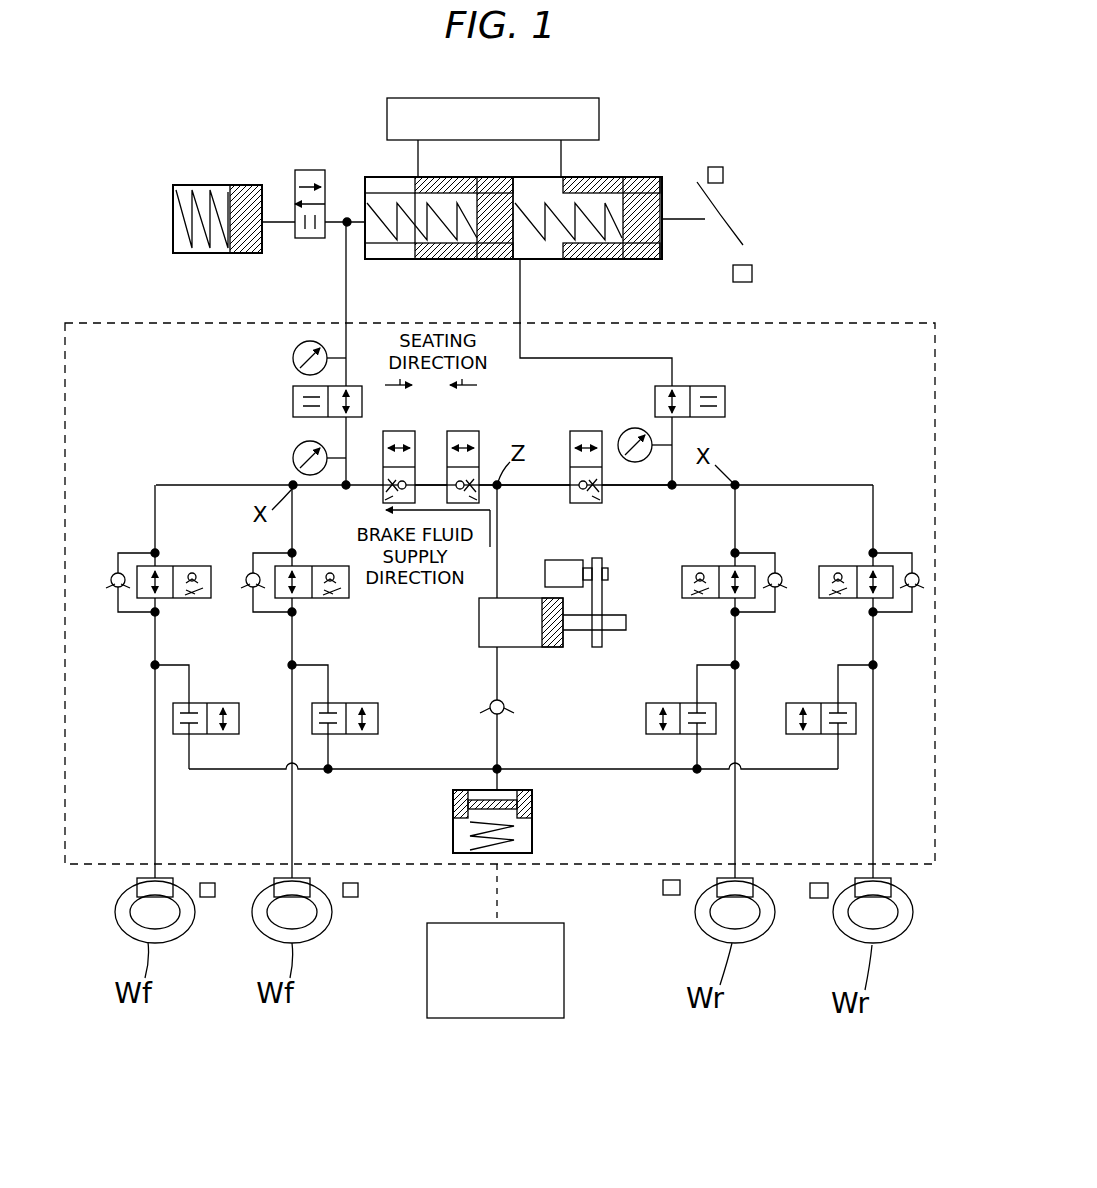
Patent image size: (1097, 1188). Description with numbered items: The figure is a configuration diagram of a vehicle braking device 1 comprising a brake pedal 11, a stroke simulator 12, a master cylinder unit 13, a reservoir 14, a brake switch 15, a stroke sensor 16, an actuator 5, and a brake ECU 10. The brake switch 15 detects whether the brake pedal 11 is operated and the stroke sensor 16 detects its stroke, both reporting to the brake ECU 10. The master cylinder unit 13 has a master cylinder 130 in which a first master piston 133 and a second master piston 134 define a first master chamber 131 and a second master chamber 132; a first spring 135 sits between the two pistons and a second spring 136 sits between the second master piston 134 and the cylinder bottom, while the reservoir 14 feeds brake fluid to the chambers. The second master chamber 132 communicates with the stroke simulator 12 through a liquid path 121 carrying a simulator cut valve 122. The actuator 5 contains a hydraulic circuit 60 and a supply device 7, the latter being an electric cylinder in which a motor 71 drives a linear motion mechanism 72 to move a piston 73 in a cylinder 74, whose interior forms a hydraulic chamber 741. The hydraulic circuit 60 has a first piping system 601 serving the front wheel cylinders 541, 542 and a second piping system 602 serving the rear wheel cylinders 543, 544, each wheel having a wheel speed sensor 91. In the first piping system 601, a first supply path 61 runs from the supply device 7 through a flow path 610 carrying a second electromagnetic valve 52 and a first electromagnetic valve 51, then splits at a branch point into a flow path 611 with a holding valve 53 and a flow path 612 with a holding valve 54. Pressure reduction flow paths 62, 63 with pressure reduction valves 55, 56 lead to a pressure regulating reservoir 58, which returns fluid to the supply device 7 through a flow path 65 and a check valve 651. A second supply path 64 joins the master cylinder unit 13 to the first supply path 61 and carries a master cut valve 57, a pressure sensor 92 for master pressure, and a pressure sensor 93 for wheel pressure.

The vehicle braking device 1 is at (148, 100).
The actuator 5 is at (130, 318).
The supply device 7 is at (479, 610).
The brake ECU 10 is at (440, 980).
The brake pedal 11 is at (745, 236).
The stroke simulator 12 is at (173, 215).
The master cylinder unit 13 is at (612, 176).
The reservoir 14 is at (468, 103).
The brake switch 15 is at (722, 170).
The stroke sensor 16 is at (752, 278).
The first electromagnetic valve 51 is at (400, 430).
The second electromagnetic valve 52 is at (465, 430).
The holding valve 53 is at (176, 566).
The holding valve 54 is at (350, 594).
The pressure reduction valve 55 is at (240, 716).
The pressure reduction valve 56 is at (378, 716).
The master cut valve 57 is at (293, 400).
The pressure regulating reservoir 58 is at (535, 840).
The hydraulic circuit 60 is at (217, 338).
The first supply path 61 is at (250, 485).
The pressure reduction flow path 62 is at (210, 771).
The pressure reduction flow path 63 is at (325, 665).
The second supply path 64 is at (345, 310).
The flow path 65 is at (498, 750).
The motor 71 is at (560, 562).
The linear motion mechanism 72 is at (612, 636).
The piston 73 is at (555, 650).
The cylinder 74 is at (479, 648).
The wheel speed sensor 91 is at (206, 899).
The pressure sensor 92 is at (293, 358).
The pressure sensor 93 is at (293, 458).
The liquid path 121 is at (280, 218).
The simulator cut valve 122 is at (305, 170).
The master cylinder 130 is at (640, 178).
The first master chamber 131 is at (534, 260).
The second master chamber 132 is at (394, 261).
The first master piston 133 is at (618, 261).
The second master piston 134 is at (470, 261).
The first spring 135 is at (530, 215).
The second spring 136 is at (400, 210).
The wheel cylinder 541 is at (140, 890).
The wheel cylinder 542 is at (305, 900).
The wheel cylinder 543 is at (722, 898).
The wheel cylinder 544 is at (862, 898).
The first piping system 601 is at (183, 393).
The second piping system 602 is at (790, 393).
The flow path 610 is at (318, 489).
The flow path 611 is at (155, 705).
The flow path 612 is at (292, 648).
The check valve 651 is at (488, 712).
The hydraulic chamber 741 is at (479, 628).